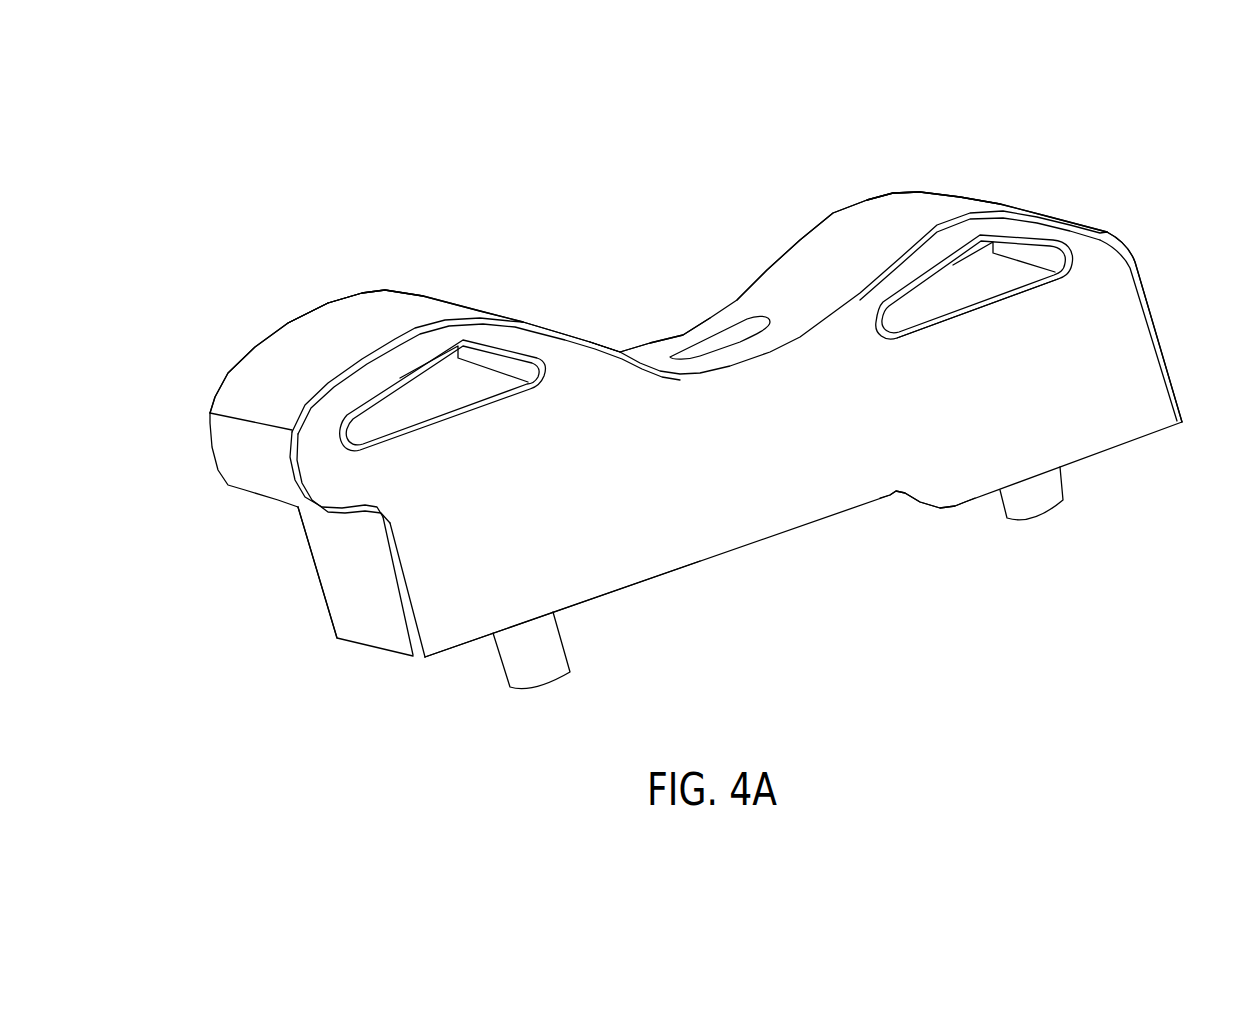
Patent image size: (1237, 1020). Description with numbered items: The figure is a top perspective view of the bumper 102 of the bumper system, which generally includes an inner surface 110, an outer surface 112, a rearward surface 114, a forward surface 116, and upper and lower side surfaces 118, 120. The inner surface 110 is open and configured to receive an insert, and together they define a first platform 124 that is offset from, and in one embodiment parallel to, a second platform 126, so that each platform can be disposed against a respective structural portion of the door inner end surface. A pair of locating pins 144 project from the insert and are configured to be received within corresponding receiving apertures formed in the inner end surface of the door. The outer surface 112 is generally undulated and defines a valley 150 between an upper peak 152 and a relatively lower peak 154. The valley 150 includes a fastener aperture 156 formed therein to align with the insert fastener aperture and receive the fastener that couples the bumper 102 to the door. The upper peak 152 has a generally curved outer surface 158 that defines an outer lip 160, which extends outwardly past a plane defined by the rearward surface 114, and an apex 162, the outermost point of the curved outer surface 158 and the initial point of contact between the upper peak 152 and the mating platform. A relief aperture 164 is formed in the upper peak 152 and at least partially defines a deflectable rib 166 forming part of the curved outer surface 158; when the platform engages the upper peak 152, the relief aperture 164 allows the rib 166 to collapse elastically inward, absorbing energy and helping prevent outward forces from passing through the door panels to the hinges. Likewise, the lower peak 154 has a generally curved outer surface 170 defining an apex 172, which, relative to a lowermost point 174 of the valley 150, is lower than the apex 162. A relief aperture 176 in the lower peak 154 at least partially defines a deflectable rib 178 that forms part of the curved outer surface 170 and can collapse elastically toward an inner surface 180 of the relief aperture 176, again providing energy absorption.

The bumper 102 is at (1118, 133).
The inner surface 110 is at (808, 545).
The outer surface 112 is at (803, 255).
The rearward surface 114 is at (347, 602).
The forward surface 116 is at (1160, 332).
The upper side surface 118 is at (313, 553).
The lower side surface 120 is at (430, 598).
The first platform 124 is at (603, 595).
The second platform 126 is at (972, 500).
The locating pins 144 is at (535, 690).
The valley 150 is at (684, 292).
The upper peak 152 is at (396, 218).
The lower peak 154 is at (932, 150).
The fastener aperture 156 is at (730, 333).
The curved outer surface 158 is at (297, 340).
The outer lip 160 is at (243, 482).
The apex 162 is at (385, 297).
The relief aperture 164 is at (492, 350).
The deflectable rib 166 is at (423, 330).
The curved outer surface 170 is at (873, 228).
The apex 172 is at (920, 190).
The lowermost point 174 is at (683, 333).
The relief aperture 176 is at (1060, 256).
The deflectable rib 178 is at (1000, 221).
The inner surface 180 is at (980, 292).